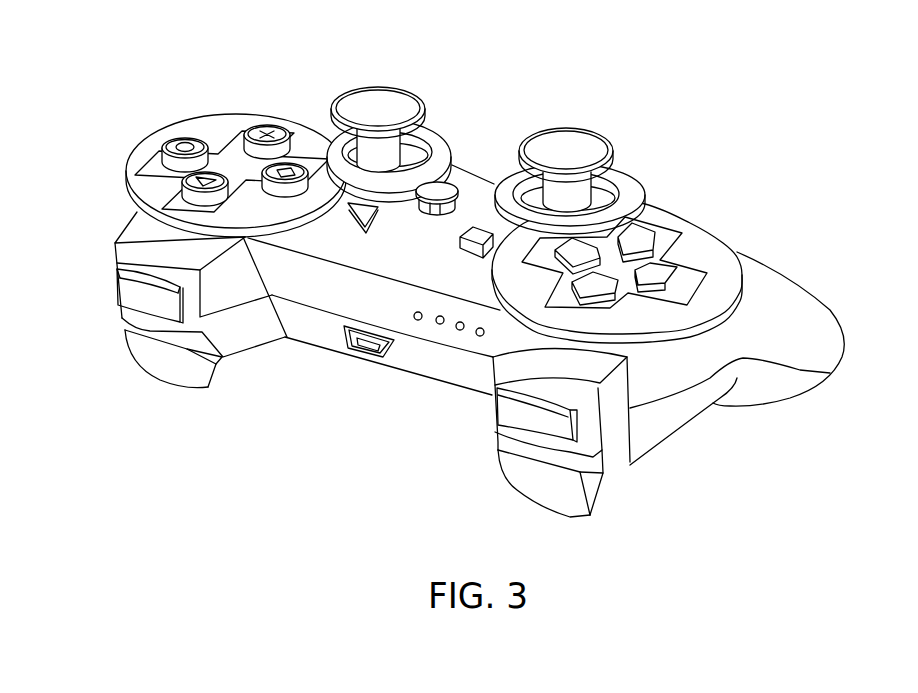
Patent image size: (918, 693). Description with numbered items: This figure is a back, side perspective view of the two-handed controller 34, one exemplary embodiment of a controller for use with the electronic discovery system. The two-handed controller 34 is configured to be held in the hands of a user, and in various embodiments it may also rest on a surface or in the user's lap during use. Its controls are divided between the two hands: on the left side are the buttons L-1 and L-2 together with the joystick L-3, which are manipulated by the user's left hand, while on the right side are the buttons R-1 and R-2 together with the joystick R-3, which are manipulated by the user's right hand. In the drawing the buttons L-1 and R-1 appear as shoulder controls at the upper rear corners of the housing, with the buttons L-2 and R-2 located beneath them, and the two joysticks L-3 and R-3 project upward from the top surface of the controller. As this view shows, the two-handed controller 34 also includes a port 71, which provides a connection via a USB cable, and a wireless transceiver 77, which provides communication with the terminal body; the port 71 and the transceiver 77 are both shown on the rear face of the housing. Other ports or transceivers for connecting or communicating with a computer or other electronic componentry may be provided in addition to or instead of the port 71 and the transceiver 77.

The two-handed controller 34 is at (687, 113).
The button R-1 is at (122, 295).
The button R-2 is at (148, 365).
The joystick R-3 is at (383, 97).
The button L-1 is at (560, 433).
The button L-2 is at (563, 503).
The joystick L-3 is at (567, 142).
The port 71 is at (367, 342).
The wireless transceiver 77 is at (417, 320).